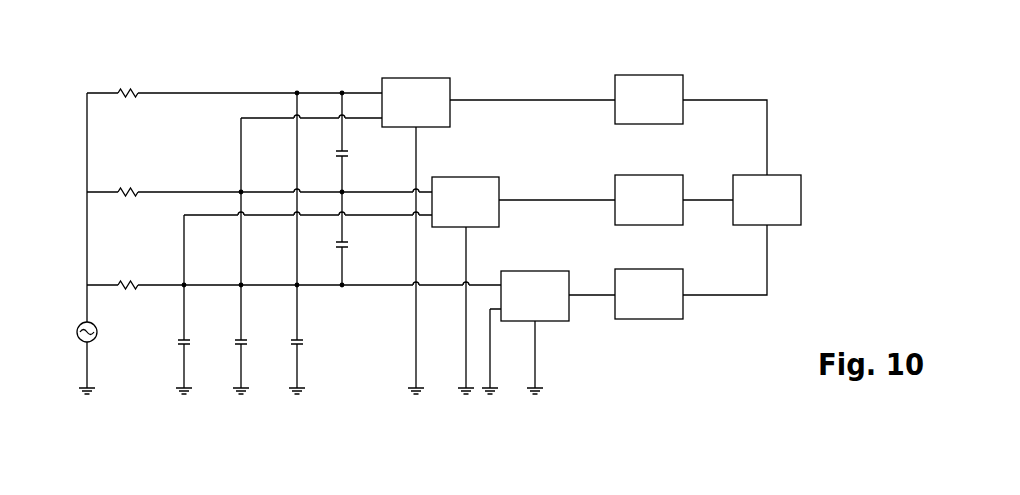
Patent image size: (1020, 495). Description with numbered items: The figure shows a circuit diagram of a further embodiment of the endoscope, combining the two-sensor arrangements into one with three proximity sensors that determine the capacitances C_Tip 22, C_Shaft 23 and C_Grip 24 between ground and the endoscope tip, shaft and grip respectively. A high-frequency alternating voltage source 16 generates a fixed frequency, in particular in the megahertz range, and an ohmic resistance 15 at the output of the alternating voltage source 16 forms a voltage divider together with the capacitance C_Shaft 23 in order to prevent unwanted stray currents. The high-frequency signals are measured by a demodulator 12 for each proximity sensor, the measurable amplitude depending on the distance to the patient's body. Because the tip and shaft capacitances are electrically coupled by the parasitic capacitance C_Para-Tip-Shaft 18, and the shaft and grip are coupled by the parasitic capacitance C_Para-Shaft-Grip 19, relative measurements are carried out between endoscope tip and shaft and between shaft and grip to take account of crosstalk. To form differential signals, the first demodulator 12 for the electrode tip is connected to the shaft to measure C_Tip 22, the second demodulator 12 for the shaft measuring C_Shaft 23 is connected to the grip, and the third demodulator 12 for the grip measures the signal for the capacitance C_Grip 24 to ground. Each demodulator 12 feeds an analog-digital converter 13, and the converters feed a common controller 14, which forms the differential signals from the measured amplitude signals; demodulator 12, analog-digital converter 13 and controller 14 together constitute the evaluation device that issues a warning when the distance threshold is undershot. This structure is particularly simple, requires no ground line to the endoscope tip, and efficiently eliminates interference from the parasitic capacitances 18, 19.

The demodulator 12 is at (475, 199).
The analog-digital converter 13 is at (649, 197).
The controller 14 is at (767, 200).
The ohmic resistance 15 is at (132, 171).
The high-frequency alternating voltage source 16 is at (67, 332).
The parasitic capacitance C_Para-Tip-Shaft 18 is at (362, 154).
The parasitic capacitance C_Para-Shaft-Grip 19 is at (364, 244).
The capacitance C_Tip 22 is at (317, 341).
The capacitance C_Shaft 23 is at (260, 341).
The capacitance C_Grip 24 is at (164, 346).